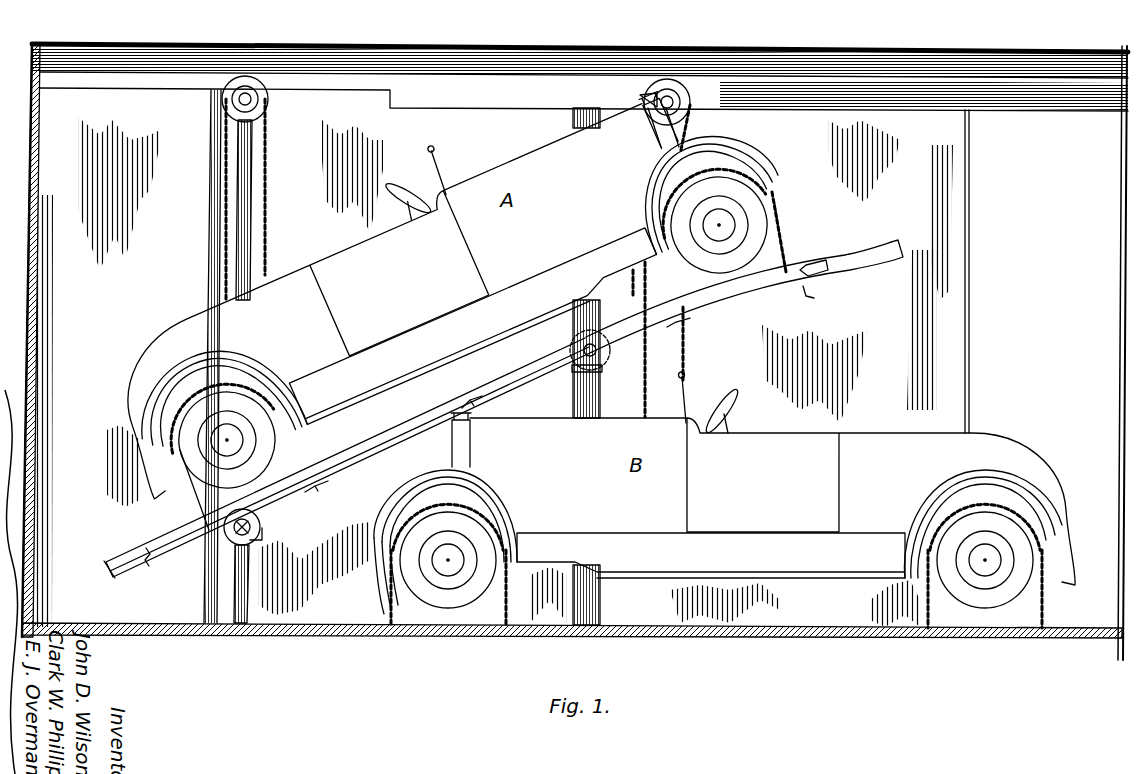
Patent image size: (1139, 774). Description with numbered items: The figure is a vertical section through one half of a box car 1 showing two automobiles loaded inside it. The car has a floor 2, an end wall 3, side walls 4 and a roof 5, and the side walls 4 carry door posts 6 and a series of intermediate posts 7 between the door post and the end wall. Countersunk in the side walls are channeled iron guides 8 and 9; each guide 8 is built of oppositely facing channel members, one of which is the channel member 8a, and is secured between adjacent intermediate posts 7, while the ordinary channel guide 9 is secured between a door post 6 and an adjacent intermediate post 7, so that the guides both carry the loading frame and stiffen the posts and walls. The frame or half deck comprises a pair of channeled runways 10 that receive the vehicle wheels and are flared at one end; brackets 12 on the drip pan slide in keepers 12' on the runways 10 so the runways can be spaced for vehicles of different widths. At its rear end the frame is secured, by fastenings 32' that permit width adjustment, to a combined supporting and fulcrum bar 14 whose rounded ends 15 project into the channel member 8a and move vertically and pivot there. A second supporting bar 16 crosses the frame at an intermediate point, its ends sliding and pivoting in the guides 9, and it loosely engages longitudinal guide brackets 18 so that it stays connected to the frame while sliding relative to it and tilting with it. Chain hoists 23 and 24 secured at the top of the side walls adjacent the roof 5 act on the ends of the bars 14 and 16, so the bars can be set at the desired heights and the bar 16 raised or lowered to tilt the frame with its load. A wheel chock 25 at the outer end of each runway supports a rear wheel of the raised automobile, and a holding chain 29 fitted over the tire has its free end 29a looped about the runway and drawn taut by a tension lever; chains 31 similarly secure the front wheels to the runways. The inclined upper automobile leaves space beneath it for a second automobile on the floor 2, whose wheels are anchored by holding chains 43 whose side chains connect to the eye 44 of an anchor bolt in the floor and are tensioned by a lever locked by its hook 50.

The box car 1 is at (30, 237).
The floor 2 is at (330, 637).
The end wall 3 is at (36, 333).
The side walls 4 is at (119, 209).
The roof 5 is at (355, 50).
The door posts 6 is at (969, 163).
The intermediate posts 7 is at (209, 156).
The guides 8 is at (232, 177).
The channel member 8a is at (250, 216).
The guides 9 is at (600, 601).
The runways 10 is at (445, 384).
The brackets 12 is at (749, 261).
The keepers 12' is at (567, 396).
The combined supporting and fulcrum bar 14 is at (258, 521).
The ends of bar 15 is at (216, 550).
The second supporting bar 16 is at (566, 350).
The guide brackets 18 is at (568, 388).
The chain hoist 23 is at (269, 104).
The chain hoist 24 is at (693, 107).
The wheel chock 25 is at (200, 513).
The holding chain 29 is at (286, 386).
The free end of chain member 29a is at (786, 258).
The chains 31 is at (770, 192).
The fastenings 32' is at (285, 540).
The holding chain 43 is at (474, 510).
The eye 44 is at (391, 620).
The hook 50 is at (512, 600).